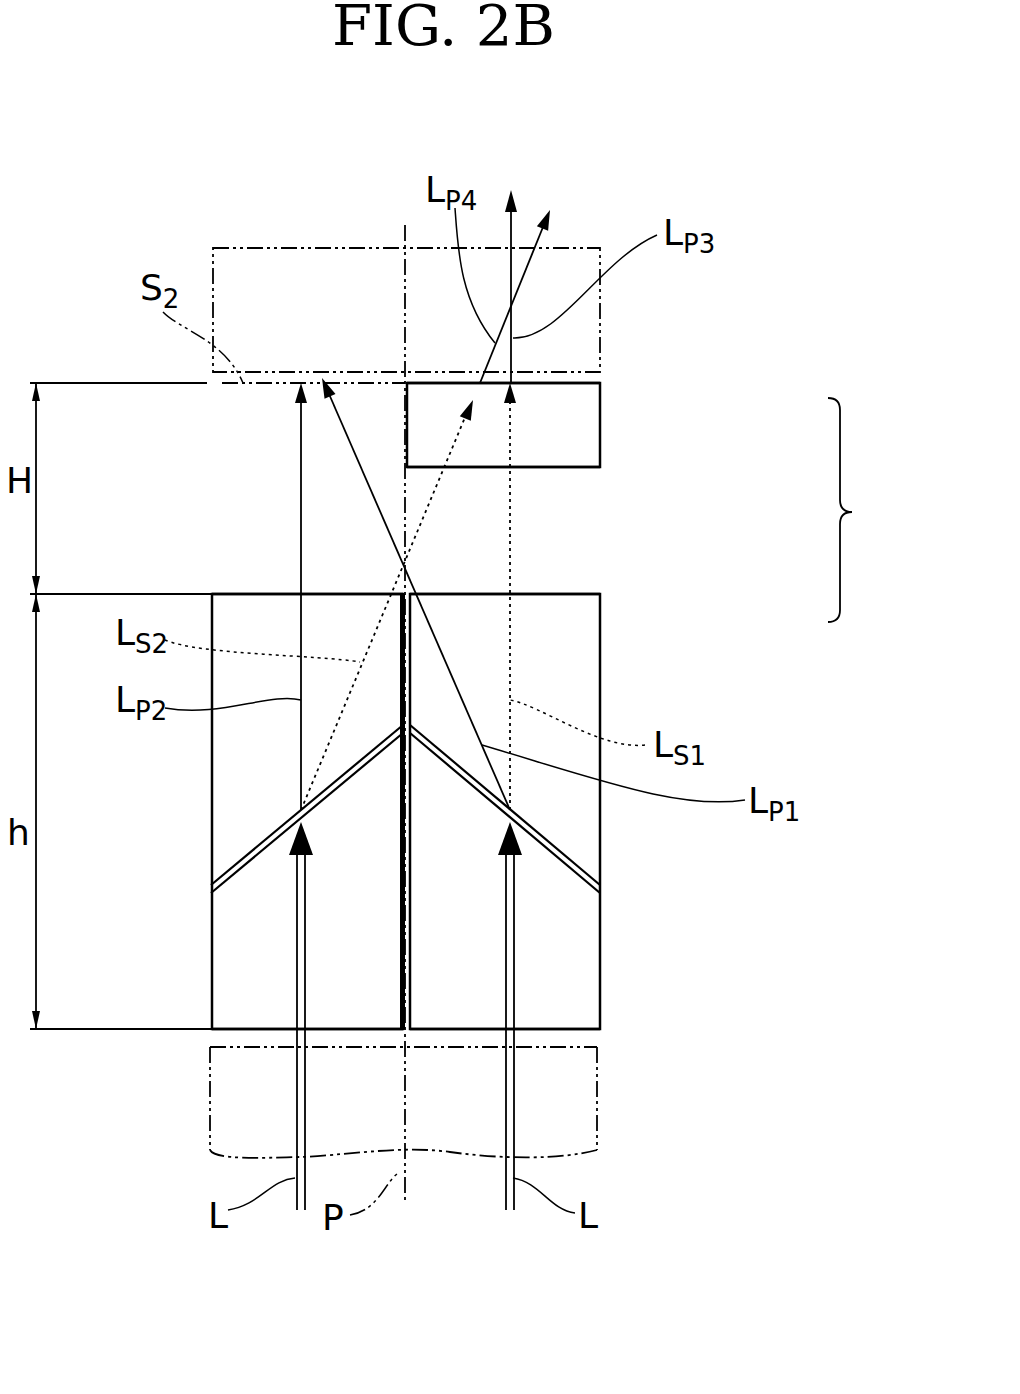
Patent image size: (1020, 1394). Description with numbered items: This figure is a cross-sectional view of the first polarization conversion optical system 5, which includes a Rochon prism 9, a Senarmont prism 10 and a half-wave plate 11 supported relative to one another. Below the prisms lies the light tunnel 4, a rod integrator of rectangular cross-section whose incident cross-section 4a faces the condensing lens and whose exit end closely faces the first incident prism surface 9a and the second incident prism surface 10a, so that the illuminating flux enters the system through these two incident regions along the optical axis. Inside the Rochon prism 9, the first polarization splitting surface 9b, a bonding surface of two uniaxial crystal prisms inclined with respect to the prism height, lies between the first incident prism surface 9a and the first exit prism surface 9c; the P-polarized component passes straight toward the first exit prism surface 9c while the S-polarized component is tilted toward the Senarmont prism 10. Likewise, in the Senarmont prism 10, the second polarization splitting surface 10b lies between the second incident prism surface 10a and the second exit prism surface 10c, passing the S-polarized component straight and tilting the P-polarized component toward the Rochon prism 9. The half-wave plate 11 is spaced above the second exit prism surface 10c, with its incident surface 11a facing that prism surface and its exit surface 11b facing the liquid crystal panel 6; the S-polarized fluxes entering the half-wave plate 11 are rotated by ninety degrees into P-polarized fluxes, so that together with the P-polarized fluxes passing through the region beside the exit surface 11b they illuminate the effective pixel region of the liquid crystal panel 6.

The light tunnel 4 is at (598, 1078).
The incident cross-section 4a is at (578, 1045).
The first polarization conversion optical system 5 is at (885, 532).
The liquid crystal panel 6 is at (570, 248).
The Rochon prism 9 is at (365, 572).
The first incident prism surface 9a is at (228, 1033).
The first polarization splitting surface 9b is at (250, 830).
The first exit prism surface 9c is at (252, 593).
The Senarmont prism 10 is at (682, 622).
The second incident prism surface 10a is at (540, 1033).
The second polarization splitting surface 10b is at (562, 833).
The second exit prism surface 10c is at (563, 593).
The half-wave plate 11 is at (600, 417).
The incident surface 11a is at (573, 467).
The exit surface 11b is at (580, 382).